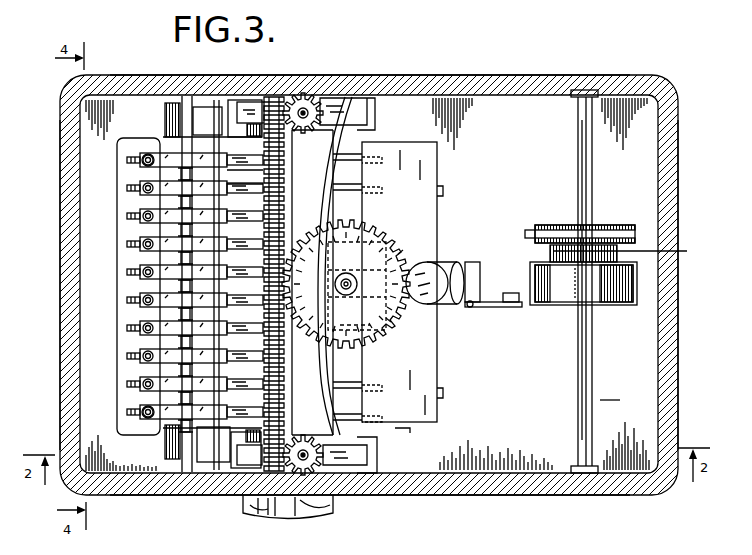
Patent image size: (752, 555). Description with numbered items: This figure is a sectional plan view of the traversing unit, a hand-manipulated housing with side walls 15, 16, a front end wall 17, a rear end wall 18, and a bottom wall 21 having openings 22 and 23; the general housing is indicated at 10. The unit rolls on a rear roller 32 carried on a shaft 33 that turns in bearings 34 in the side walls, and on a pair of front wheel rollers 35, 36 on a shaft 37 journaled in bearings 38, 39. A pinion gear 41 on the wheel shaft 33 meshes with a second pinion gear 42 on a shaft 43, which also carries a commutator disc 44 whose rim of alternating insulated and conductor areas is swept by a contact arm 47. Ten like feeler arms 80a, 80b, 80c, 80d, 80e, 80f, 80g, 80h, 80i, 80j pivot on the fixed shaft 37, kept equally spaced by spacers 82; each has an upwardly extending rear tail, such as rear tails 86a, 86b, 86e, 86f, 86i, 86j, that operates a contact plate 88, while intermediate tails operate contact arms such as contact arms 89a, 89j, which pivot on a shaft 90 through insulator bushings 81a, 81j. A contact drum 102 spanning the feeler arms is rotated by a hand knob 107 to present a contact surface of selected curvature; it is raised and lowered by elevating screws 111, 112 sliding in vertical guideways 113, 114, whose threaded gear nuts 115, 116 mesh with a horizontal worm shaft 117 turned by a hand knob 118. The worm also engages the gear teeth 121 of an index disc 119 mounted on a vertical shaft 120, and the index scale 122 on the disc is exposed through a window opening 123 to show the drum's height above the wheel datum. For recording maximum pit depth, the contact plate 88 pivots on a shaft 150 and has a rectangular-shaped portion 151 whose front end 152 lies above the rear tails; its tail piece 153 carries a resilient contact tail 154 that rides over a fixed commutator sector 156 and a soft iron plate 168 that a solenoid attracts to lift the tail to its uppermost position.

The housing 10 is at (566, 499).
The side wall 15 is at (497, 488).
The side wall 16 is at (502, 77).
The front end wall 17 is at (63, 136).
The rear end wall 18 is at (672, 222).
The bottom wall 21 is at (640, 404).
The opening 22 is at (116, 204).
The opening 23 is at (638, 297).
The roller 32 is at (563, 297).
The shaft 33 is at (593, 190).
The bearings 34 is at (573, 98).
The front wheel roller 35 is at (202, 458).
The front wheel roller 36 is at (200, 102).
The shaft 37 is at (249, 99).
The bearing 38 is at (209, 499).
The bearing 39 is at (230, 98).
The pinion gear 41 is at (550, 252).
The second pinion gear 42 is at (630, 252).
The shaft 43 is at (587, 150).
The commutator disc 44 is at (548, 225).
The contact arm 47 is at (526, 233).
The feeler arm 80a is at (127, 412).
The feeler arm 80b is at (127, 384).
The feeler arm 80c is at (127, 356).
The feeler arm 80d is at (127, 328).
The feeler arm 80e is at (127, 300).
The feeler arm 80f is at (127, 272).
The feeler arm 80g is at (127, 244).
The feeler arm 80h is at (127, 216).
The feeler arm 80i is at (127, 188).
The feeler arm 80j is at (127, 160).
The insulator bushing 81a is at (213, 444).
The insulator bushing 81j is at (207, 121).
The spacers 82 is at (222, 177).
The rear tail portion 86a is at (378, 407).
The rear tail portion 86b is at (378, 376).
The rear tail portion 86e is at (355, 316).
The rear tail portion 86f is at (398, 285).
The rear tail portion 86i is at (375, 196).
The rear tail portion 86j is at (375, 169).
The contact plate 88 is at (412, 168).
The contact arm 89a is at (157, 421).
The contact arm 89j is at (156, 156).
The shaft 90 is at (185, 474).
The contact drum 102 is at (326, 158).
The hand knob 107 is at (312, 507).
The elevating screw 111 is at (306, 458).
The elevating screw 112 is at (311, 94).
The vertical guideway 113 is at (377, 452).
The vertical guideway 114 is at (375, 113).
The gear nut 115 is at (320, 450).
The gear nut 116 is at (306, 110).
The worm shaft 117 is at (272, 97).
The hand knob 118 is at (268, 507).
The index disc 119 is at (333, 285).
The vertical shaft 120 is at (345, 279).
The gear teeth 121 is at (399, 254).
The index scale 122 is at (388, 319).
The window opening 123 is at (428, 305).
The shaft 150 is at (396, 436).
The rectangular-shaped portion 151 is at (437, 193).
The front end 152 is at (437, 394).
The tail piece 153 is at (475, 262).
The resilient contact tail 154 is at (500, 308).
The commutator sector 156 is at (511, 293).
The soft iron plate 168 is at (472, 306).